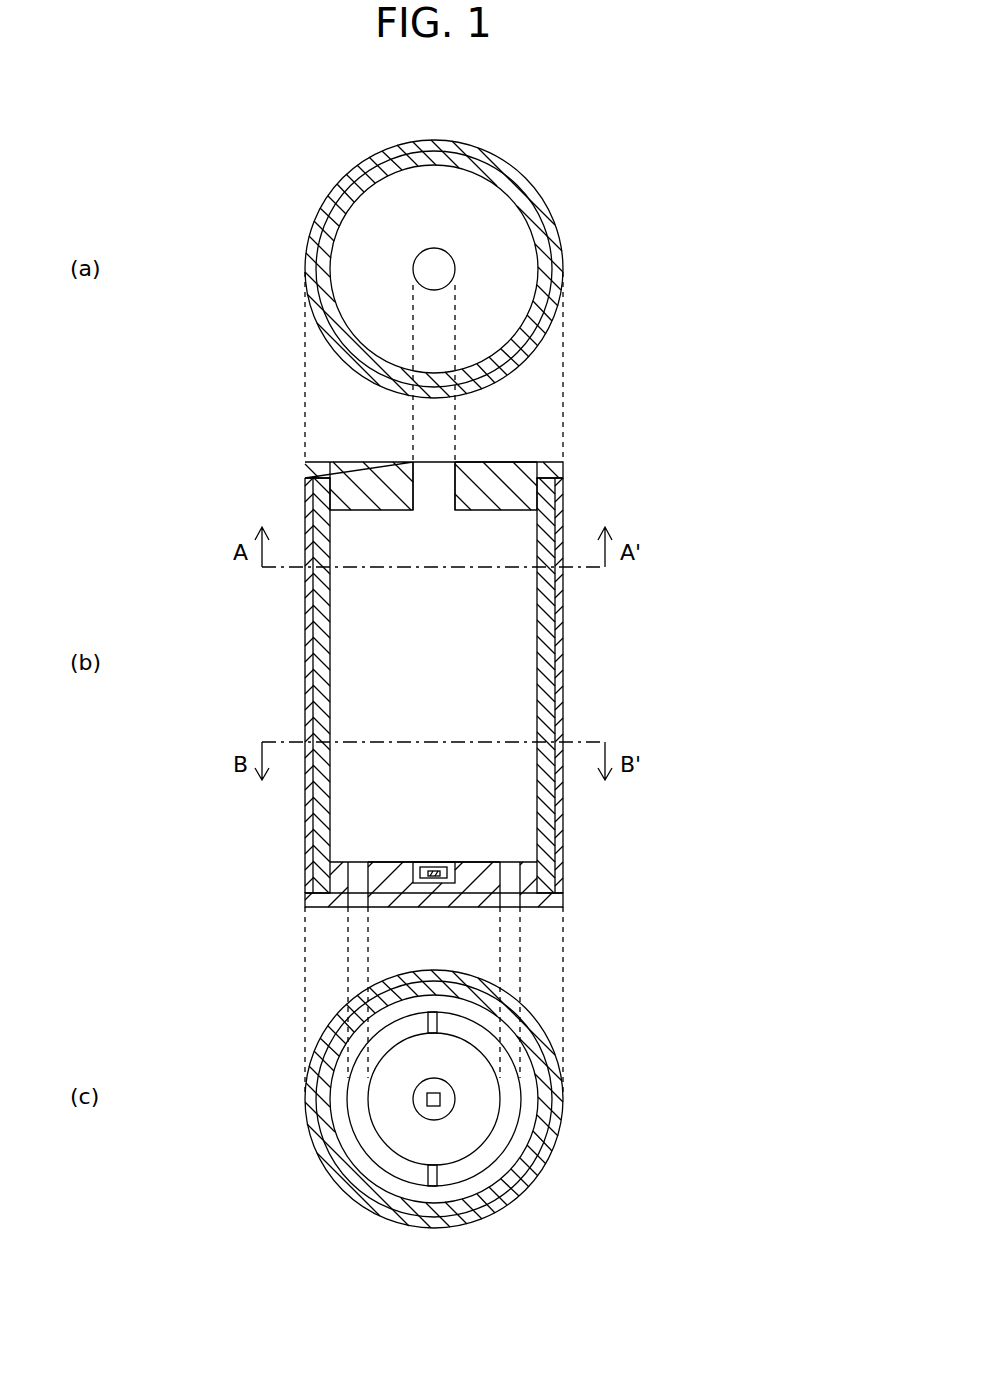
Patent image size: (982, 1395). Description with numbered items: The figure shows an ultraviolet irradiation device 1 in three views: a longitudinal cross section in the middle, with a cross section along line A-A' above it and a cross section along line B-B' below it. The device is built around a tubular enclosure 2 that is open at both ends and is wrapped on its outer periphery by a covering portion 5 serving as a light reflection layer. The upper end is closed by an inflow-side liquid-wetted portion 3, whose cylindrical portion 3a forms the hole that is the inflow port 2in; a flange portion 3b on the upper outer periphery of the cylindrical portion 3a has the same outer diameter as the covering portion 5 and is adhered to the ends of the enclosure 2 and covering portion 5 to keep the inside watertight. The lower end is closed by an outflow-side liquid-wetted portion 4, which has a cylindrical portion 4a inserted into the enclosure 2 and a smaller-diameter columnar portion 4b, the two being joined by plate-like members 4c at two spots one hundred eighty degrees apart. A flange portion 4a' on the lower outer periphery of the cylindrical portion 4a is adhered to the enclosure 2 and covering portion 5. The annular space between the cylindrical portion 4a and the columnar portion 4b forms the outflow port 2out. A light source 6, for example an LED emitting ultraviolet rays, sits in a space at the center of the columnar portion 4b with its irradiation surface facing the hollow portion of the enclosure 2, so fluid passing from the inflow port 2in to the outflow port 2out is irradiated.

The ultraviolet irradiation device 1 is at (658, 90).
The tubular enclosure 2 is at (556, 232).
The inflow port 2in is at (413, 275).
The outflow port 2out is at (350, 893).
The inflow-side liquid-wetted portion 3 is at (520, 271).
The cylindrical portion 3a is at (470, 465).
The flange portion 3b is at (551, 472).
The outflow-side liquid-wetted portion 4 is at (393, 870).
The cylindrical portion 4a is at (445, 1023).
The flange portion 4a' is at (470, 906).
The columnar portion 4b is at (482, 870).
The plate-like members 4c is at (438, 1022).
The covering portion 5 is at (538, 184).
The light source 6 is at (436, 868).